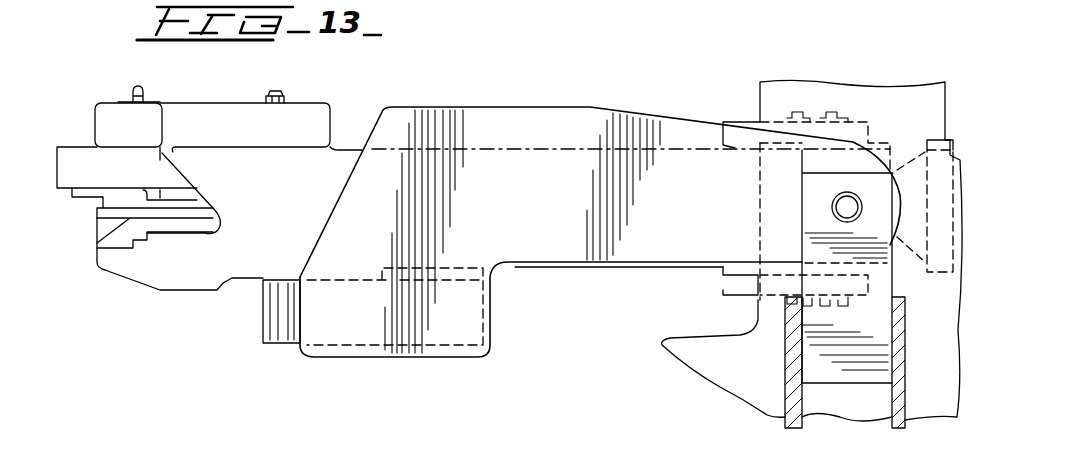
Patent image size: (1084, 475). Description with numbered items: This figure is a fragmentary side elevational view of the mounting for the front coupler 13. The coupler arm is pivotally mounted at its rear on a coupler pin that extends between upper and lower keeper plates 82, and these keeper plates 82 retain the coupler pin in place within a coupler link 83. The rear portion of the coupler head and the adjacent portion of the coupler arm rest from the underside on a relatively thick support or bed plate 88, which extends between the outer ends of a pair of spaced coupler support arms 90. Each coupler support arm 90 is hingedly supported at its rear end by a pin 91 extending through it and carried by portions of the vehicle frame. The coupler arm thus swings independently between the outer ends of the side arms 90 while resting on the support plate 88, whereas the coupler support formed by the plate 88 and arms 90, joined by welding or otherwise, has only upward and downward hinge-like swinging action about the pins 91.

The front coupler 13 is at (70, 135).
The coupler support arm 90 is at (467, 108).
The support or bed plate 88 is at (263, 328).
The coupler link 83 is at (727, 127).
The keeper plate 82 is at (757, 119).
The pin 91 is at (834, 216).